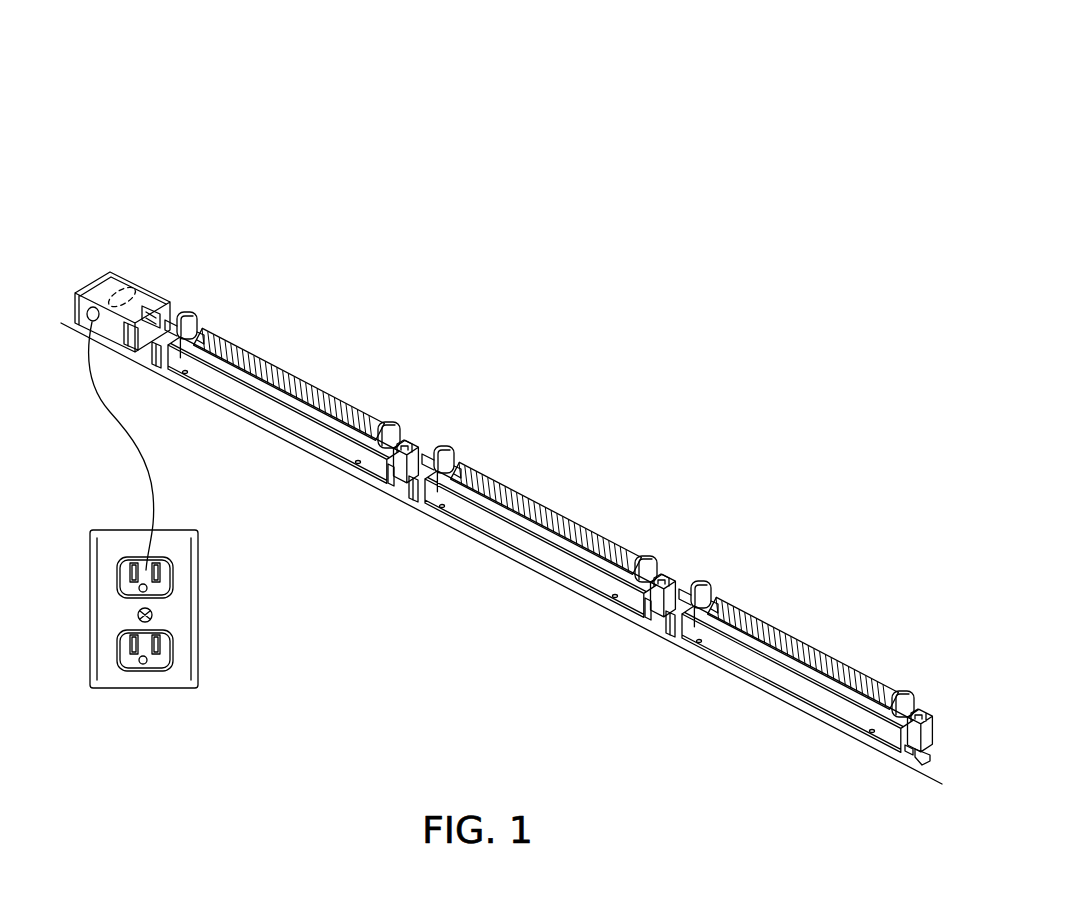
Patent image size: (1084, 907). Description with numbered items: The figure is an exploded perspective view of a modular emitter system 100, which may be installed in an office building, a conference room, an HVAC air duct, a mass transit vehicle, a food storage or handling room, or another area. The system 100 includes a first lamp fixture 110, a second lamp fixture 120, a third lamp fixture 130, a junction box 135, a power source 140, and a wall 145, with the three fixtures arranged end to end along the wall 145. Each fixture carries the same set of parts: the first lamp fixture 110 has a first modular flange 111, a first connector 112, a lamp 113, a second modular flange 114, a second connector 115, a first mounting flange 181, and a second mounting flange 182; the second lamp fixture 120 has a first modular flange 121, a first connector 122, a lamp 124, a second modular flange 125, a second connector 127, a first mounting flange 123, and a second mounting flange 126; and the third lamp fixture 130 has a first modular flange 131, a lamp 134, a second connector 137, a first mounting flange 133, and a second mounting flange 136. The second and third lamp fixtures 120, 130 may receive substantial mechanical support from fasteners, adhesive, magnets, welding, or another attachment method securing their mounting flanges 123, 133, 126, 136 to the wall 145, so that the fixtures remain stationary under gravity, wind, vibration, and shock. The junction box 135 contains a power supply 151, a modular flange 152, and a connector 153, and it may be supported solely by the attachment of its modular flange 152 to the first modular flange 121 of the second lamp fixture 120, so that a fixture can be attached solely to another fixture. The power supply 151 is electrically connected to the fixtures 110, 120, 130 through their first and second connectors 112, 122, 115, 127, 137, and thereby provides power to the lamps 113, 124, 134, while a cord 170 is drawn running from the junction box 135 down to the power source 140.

The modular emitter system 100 is at (258, 92).
The first lamp fixture 110 is at (558, 493).
The first modular flange 111 is at (413, 497).
The first connector 112 is at (440, 441).
The lamp 113 is at (588, 530).
The second modular flange 114 is at (656, 600).
The second connector 115 is at (678, 604).
The second lamp fixture 120 is at (315, 352).
The first modular flange 121 is at (172, 370).
The first connector 122 is at (178, 307).
The first mounting flange 123 is at (287, 256).
The lamp 124 is at (320, 378).
The second modular flange 125 is at (392, 470).
The second mounting flange 126 is at (410, 488).
The second connector 127 is at (423, 466).
The third lamp fixture 130 is at (772, 644).
The first modular flange 131 is at (673, 641).
The first mounting flange 133 is at (694, 584).
The lamp 134 is at (828, 657).
The junction box 135 is at (495, 493).
The second mounting flange 136 is at (922, 755).
The second connector 137 is at (926, 706).
The power source 140 is at (172, 654).
The wall 145 is at (938, 783).
The power supply 151 is at (126, 294).
The modular flange 152 is at (138, 346).
The connector 153 is at (166, 330).
The power cord 170 is at (150, 484).
The first mounting flange 181 is at (545, 388).
The second mounting flange 182 is at (663, 617).